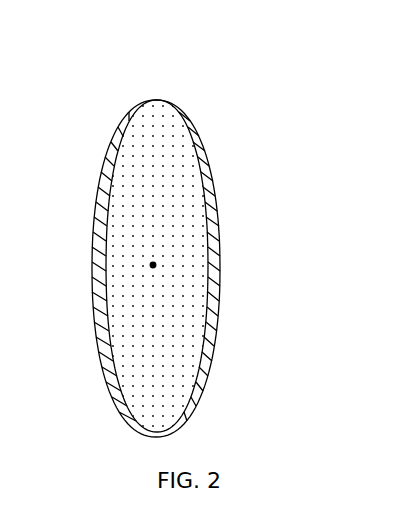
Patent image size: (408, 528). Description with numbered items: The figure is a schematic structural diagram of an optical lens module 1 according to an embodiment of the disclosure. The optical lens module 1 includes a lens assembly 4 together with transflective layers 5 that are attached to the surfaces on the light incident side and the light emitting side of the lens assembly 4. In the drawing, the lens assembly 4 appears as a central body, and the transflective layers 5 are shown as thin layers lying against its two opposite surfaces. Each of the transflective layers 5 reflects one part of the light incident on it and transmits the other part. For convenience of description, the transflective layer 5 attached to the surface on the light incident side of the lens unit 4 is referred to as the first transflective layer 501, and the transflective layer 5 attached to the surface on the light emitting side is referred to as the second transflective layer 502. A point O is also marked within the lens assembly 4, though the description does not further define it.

The optical lens module 1 is at (196, 243).
The lens assembly 4 is at (180, 161).
The transflective layer 5 is at (177, 243).
The first transflective layer 501 is at (121, 103).
The second transflective layer 502 is at (192, 101).
The center point O is at (161, 276).